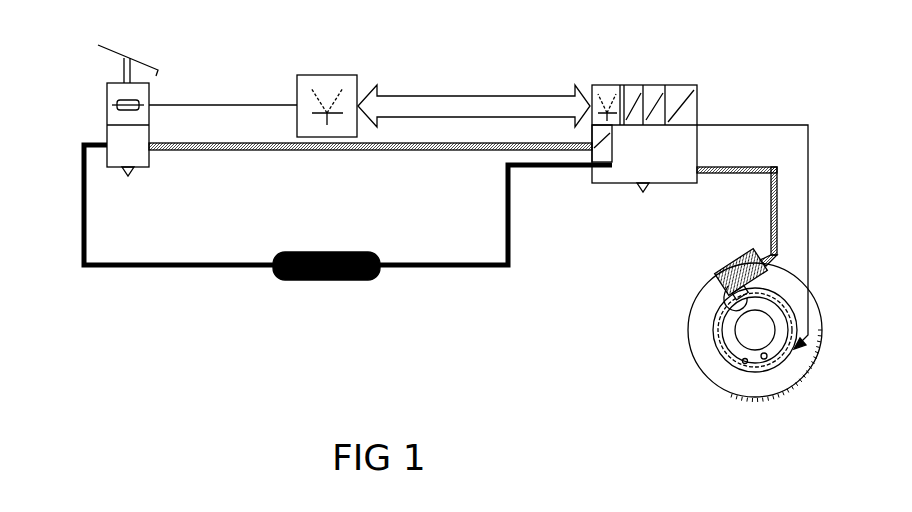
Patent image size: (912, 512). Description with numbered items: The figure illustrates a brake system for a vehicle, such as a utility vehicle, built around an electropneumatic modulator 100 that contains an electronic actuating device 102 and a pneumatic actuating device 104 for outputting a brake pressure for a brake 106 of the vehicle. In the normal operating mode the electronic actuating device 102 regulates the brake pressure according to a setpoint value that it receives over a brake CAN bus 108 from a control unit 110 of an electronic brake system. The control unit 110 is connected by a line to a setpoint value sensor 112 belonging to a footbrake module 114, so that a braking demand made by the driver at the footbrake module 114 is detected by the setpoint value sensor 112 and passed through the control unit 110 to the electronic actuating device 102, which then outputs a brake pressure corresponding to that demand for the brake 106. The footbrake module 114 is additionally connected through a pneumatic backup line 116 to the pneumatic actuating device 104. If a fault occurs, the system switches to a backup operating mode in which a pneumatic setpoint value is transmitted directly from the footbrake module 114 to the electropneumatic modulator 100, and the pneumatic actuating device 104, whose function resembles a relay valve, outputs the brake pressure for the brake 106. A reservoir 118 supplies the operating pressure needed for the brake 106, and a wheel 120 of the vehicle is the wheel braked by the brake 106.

The electropneumatic modulator 100 is at (663, 185).
The electronic actuating device 102 is at (608, 86).
The pneumatic actuating device 104 is at (599, 172).
The brake 106 is at (747, 247).
The brake CAN bus 108 is at (462, 96).
The control unit 110 is at (332, 75).
The setpoint value sensor 112 is at (107, 115).
The footbrake module 114 is at (173, 70).
The pneumatic backup line 116 is at (255, 150).
The reservoir 118 is at (373, 275).
The wheel 120 is at (688, 323).